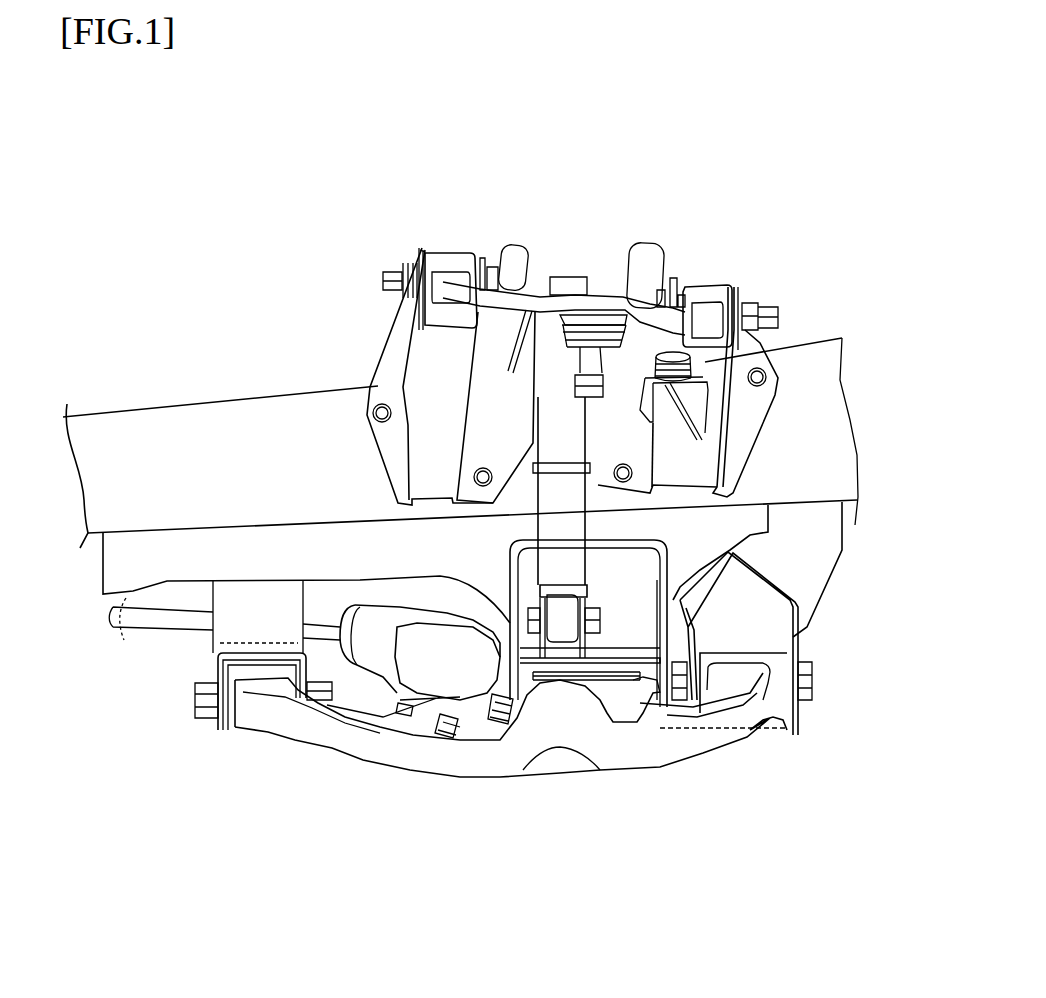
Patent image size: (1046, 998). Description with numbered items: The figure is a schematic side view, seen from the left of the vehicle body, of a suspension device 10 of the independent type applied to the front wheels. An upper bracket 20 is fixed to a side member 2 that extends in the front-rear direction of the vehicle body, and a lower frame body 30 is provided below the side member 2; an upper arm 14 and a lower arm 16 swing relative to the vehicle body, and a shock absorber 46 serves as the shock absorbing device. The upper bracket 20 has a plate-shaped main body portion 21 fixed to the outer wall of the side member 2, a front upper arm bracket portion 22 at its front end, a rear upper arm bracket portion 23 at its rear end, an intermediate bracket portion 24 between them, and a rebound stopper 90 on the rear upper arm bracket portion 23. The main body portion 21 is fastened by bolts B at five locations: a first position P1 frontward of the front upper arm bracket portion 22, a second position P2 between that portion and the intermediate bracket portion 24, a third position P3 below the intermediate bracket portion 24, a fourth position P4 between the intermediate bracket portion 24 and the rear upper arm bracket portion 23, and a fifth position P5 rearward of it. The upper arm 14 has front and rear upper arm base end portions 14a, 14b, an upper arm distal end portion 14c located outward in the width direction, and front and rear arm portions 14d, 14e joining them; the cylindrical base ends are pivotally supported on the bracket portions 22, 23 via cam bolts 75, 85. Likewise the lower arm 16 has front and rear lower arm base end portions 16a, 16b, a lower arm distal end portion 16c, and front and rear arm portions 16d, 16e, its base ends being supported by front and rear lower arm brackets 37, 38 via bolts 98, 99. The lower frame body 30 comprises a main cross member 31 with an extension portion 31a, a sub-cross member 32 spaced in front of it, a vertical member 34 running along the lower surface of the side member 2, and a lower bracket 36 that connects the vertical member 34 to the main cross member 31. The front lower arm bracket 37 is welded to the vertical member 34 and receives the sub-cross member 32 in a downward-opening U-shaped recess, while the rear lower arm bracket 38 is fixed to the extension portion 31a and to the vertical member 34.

The side member 2 is at (173, 418).
The suspension device 10 is at (569, 153).
The upper arm 14 is at (522, 267).
The front upper arm base end portion 14a is at (445, 253).
The rear upper arm base end portion 14b is at (710, 290).
The upper arm distal end portion 14c is at (598, 293).
The front arm portion 14d is at (493, 270).
The rear arm portion 14e is at (657, 315).
The lower arm 16 is at (505, 780).
The front lower arm base end portion 16a is at (246, 720).
The rear lower arm base end portion 16b is at (787, 733).
The lower arm distal end portion 16c is at (560, 742).
The front arm portion 16d is at (421, 764).
The rear arm portion 16e is at (700, 760).
The upper bracket 20 is at (380, 318).
The main body portion 21 is at (366, 377).
The front upper arm bracket portion 22 is at (423, 338).
The rear upper arm bracket portion 23 is at (707, 457).
The intermediate bracket portion 24 is at (580, 280).
The lower frame body 30 is at (135, 705).
The main cross member 31 is at (640, 720).
The extension portion 31a is at (673, 733).
The sub-cross member 32 is at (218, 648).
The vertical member 34 is at (128, 615).
The lower bracket 36 is at (660, 565).
The front lower arm bracket 37 is at (248, 597).
The rear lower arm bracket 38 is at (805, 715).
The shock absorber 46 is at (530, 523).
The cam bolt 75 is at (388, 270).
The cam bolt 85 is at (767, 315).
The rebound stopper 90 is at (700, 361).
The bolt 98 is at (196, 702).
The bolt 99 is at (812, 680).
The fastening bolt B is at (372, 422).
The first position P1 is at (385, 399).
The second position P2 is at (489, 470).
The third position P3 is at (576, 396).
The fourth position P4 is at (627, 466).
The fifth position P5 is at (757, 388).